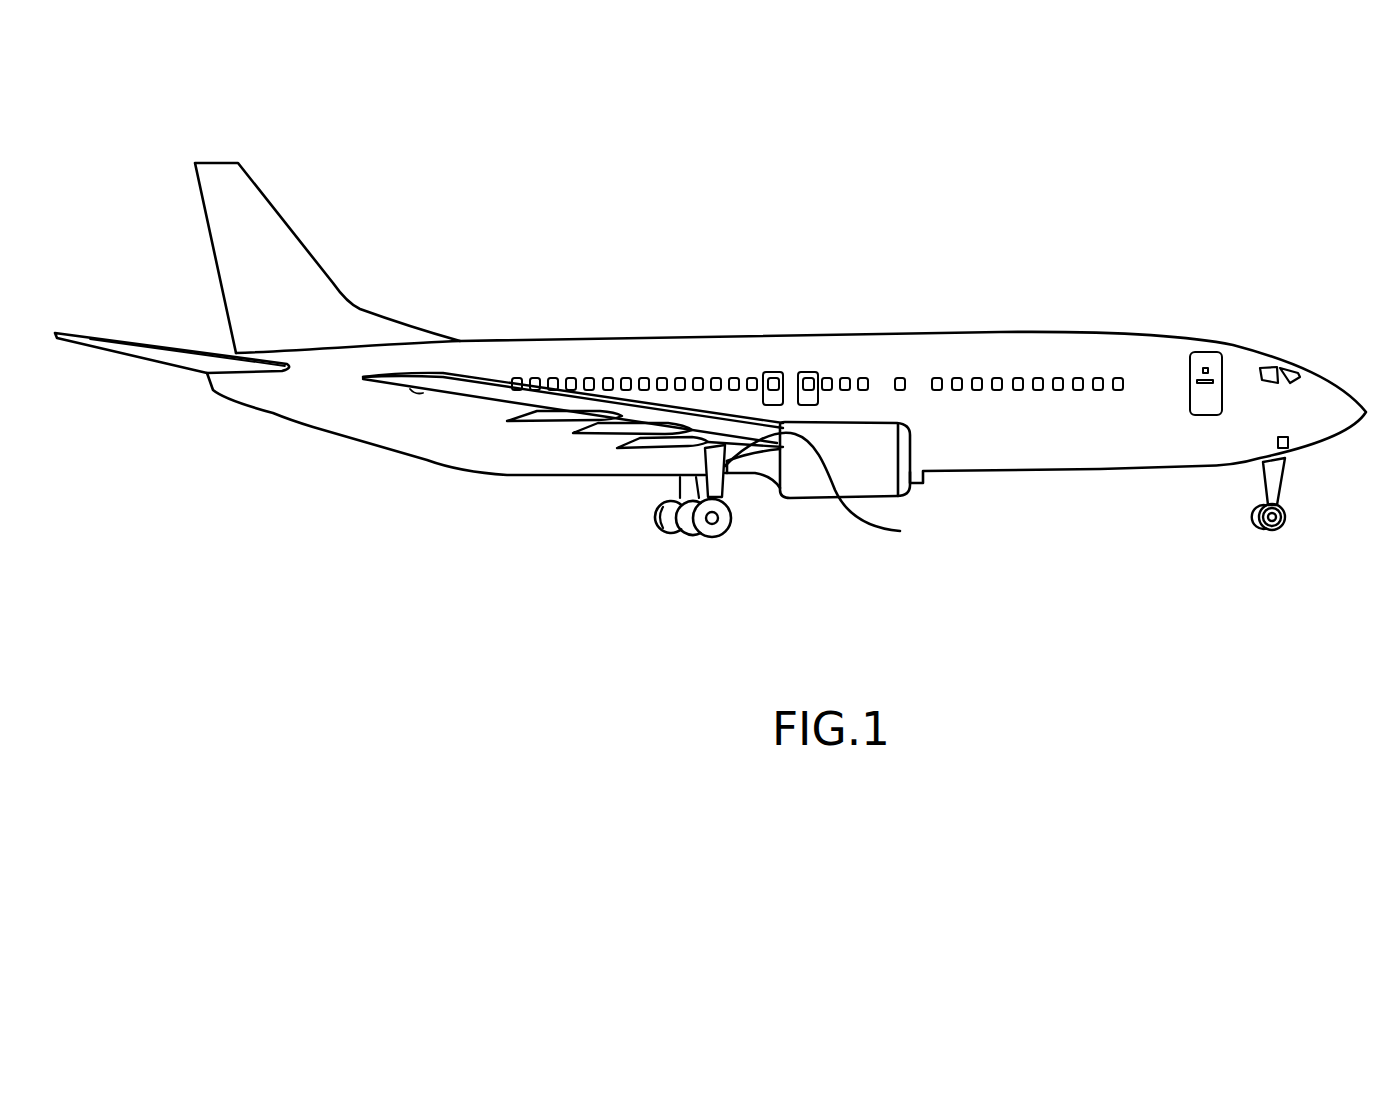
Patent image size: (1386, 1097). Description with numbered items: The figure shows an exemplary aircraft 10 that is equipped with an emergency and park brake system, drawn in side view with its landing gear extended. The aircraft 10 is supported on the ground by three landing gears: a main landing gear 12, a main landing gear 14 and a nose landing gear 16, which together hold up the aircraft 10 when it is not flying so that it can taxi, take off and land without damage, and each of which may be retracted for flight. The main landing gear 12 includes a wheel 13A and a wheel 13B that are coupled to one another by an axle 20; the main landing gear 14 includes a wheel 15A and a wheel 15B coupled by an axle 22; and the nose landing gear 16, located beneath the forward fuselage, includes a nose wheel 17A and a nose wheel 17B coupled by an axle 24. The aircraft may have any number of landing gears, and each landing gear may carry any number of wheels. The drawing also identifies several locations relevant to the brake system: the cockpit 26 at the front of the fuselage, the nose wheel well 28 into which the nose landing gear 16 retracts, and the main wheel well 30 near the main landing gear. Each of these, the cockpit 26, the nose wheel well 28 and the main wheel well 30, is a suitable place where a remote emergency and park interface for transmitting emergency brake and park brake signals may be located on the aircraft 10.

The aircraft 10 is at (912, 218).
The main landing gear 12 is at (655, 487).
The wheel 13A is at (655, 499).
The wheel 13B is at (673, 533).
The main landing gear 14 is at (748, 543).
The wheel 15A is at (726, 515).
The wheel 15B is at (684, 534).
The nose landing gear 16 is at (1320, 497).
The nose wheel 17A is at (1260, 518).
The nose wheel 17B is at (1280, 517).
The axle 20 is at (661, 520).
The axle 22 is at (712, 518).
The axle 24 is at (1274, 530).
The cockpit 26 is at (1294, 372).
The nose wheel well 28 is at (1258, 465).
The main wheel well 30 is at (826, 484).